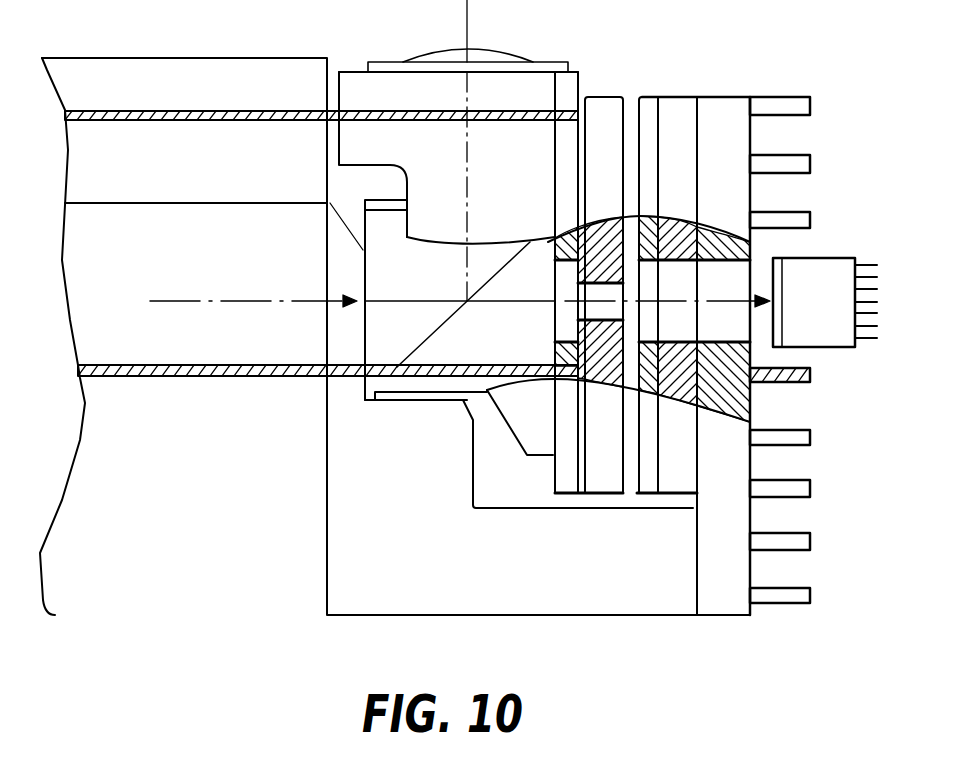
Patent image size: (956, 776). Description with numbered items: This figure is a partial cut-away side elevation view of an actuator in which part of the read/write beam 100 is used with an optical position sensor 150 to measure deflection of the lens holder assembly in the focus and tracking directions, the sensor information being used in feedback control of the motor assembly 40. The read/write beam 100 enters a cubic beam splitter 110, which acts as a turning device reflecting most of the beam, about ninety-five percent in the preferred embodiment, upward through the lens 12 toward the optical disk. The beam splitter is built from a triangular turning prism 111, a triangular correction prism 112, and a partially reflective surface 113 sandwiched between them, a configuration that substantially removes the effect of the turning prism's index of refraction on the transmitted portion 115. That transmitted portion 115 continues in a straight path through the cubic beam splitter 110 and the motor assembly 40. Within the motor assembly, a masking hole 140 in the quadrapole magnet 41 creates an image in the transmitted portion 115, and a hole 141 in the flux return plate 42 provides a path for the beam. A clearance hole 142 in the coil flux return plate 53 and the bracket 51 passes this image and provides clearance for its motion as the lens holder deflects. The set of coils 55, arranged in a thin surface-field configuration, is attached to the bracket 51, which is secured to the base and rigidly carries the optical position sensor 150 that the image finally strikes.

The lens 12 is at (417, 58).
The flux return plate 42 is at (567, 73).
The quadrapole magnet 41 is at (588, 122).
The motor assembly 40 is at (640, 92).
The set of coils 55 is at (652, 108).
The coil flux return plate 53 is at (683, 108).
The bracket 51 is at (737, 108).
The clearance hole 142 is at (687, 330).
The hole 141 is at (557, 283).
The masking hole 140 is at (577, 313).
The cubic beam splitter 110 is at (362, 343).
The triangular turning prism 111 is at (380, 353).
The partially reflective surface 113 is at (427, 347).
The triangular correction prism 112 is at (518, 353).
The read/write beam 100 is at (240, 300).
The transmitted portion 115 is at (742, 297).
The optical position sensor 150 is at (838, 337).